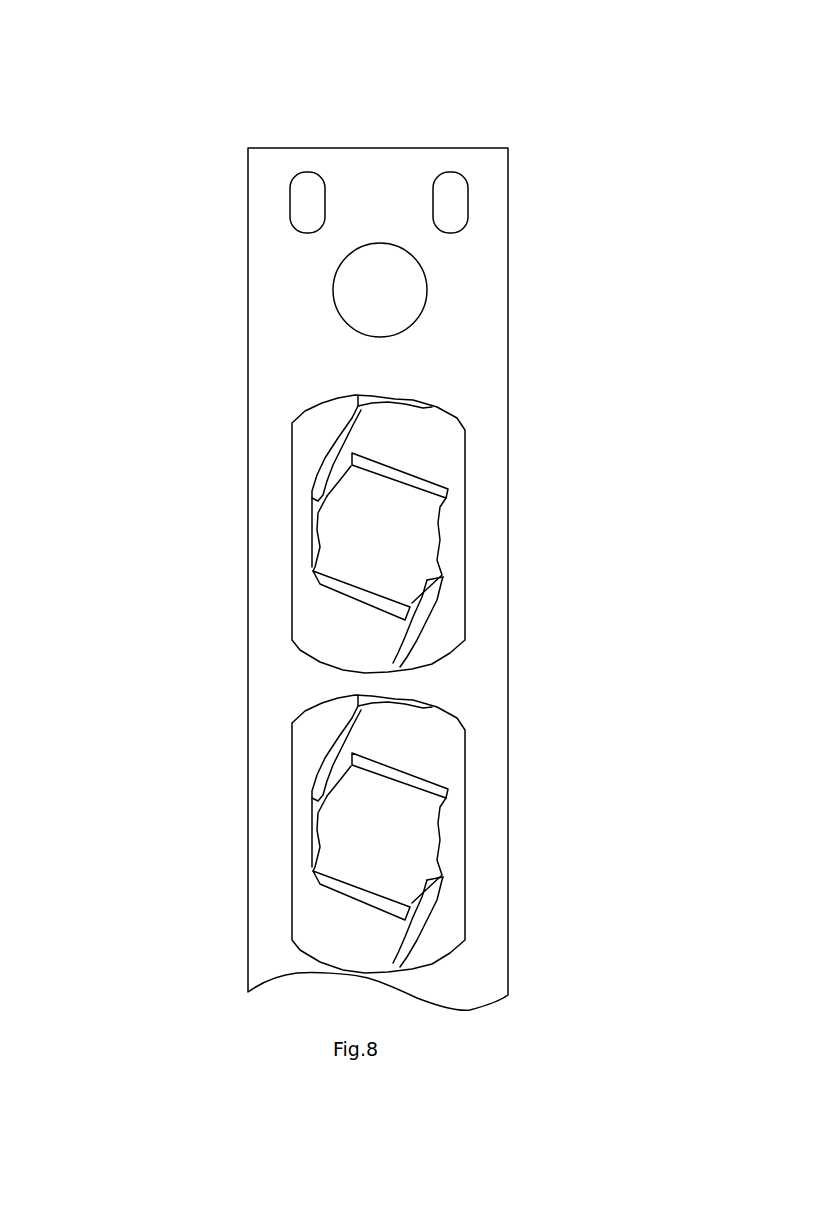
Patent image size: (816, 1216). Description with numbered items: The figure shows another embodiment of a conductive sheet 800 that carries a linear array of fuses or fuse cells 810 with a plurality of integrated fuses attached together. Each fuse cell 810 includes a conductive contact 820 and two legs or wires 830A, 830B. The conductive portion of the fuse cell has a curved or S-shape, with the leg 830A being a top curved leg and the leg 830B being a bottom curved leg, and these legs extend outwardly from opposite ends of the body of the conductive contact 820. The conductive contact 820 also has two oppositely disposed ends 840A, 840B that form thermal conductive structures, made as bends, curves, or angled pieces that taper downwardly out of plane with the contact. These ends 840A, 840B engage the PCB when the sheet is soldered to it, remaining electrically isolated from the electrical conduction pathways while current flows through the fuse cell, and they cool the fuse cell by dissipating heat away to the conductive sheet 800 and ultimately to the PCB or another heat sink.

The conductive sheet 800 is at (165, 58).
The fuse cell 810 is at (497, 411).
The conductive contact 820 is at (393, 545).
The top curved leg 830A is at (330, 443).
The bottom curved leg 830B is at (423, 620).
The thermal conductive structure 840A is at (423, 482).
The thermal conductive structure 840B is at (328, 587).